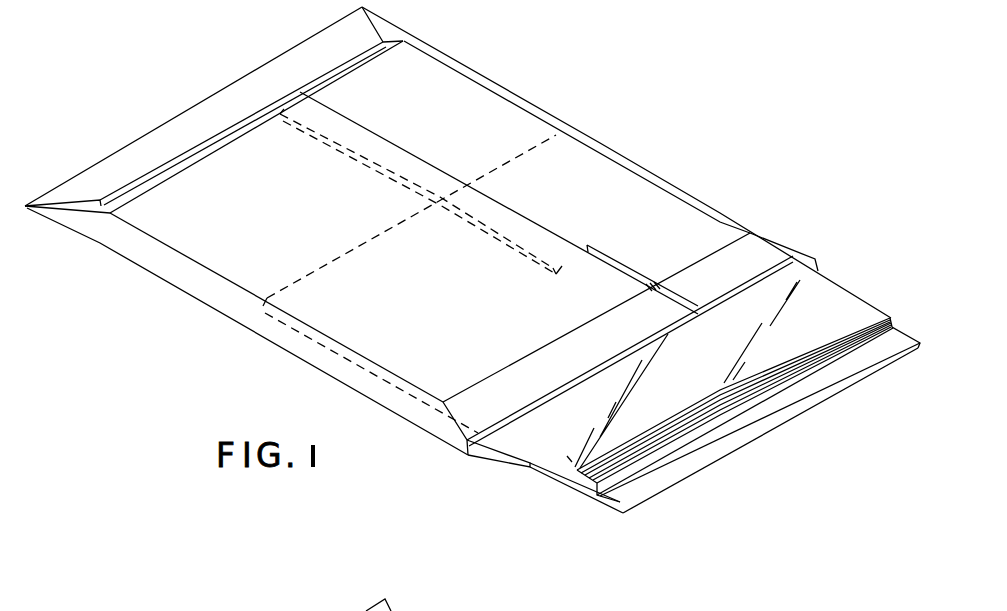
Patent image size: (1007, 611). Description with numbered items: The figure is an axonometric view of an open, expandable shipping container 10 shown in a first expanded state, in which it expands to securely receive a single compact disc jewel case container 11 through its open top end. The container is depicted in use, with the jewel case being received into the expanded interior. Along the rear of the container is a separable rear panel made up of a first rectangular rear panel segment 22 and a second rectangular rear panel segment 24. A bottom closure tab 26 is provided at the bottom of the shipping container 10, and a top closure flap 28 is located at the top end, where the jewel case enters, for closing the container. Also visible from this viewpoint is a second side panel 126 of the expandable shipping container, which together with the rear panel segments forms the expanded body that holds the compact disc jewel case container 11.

The expandable shipping container 10 is at (632, 98).
The compact disc jewel case container 11 is at (830, 298).
The first rectangular rear panel segment 22 is at (430, 120).
The second rectangular rear panel segment 24 is at (256, 213).
The bottom closure tab 26 is at (193, 107).
The second side panel 126 is at (227, 300).
The top closure flap 28 is at (741, 449).